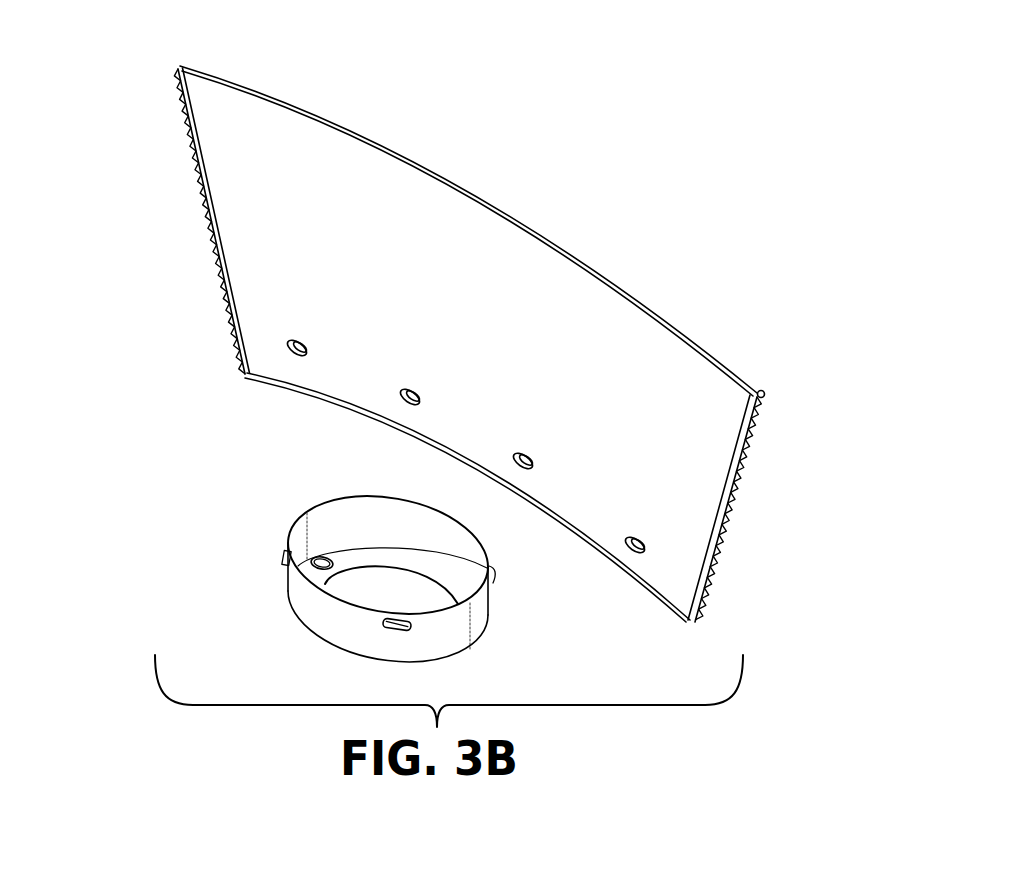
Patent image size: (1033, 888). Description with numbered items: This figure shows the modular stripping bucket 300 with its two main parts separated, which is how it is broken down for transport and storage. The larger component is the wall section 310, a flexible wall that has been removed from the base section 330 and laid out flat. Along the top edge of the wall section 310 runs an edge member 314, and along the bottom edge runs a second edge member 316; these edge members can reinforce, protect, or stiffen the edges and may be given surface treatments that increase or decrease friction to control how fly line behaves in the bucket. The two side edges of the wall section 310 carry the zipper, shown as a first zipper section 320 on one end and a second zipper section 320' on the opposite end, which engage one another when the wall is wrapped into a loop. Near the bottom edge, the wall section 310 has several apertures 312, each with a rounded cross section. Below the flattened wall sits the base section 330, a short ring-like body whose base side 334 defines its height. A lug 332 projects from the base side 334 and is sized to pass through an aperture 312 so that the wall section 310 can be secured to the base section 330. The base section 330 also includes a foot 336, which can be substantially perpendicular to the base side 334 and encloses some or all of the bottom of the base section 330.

The modular stripping bucket 300 is at (156, 46).
The wall section 310 is at (507, 312).
The apertures 312 is at (395, 393).
The edge member 314 is at (577, 250).
The edge member 316 is at (312, 395).
The first zipper section 320 is at (187, 221).
The second zipper section 320' is at (768, 507).
The base section 330 is at (485, 606).
The lug 332 is at (288, 548).
The base side 334 is at (403, 527).
The foot 336 is at (305, 637).